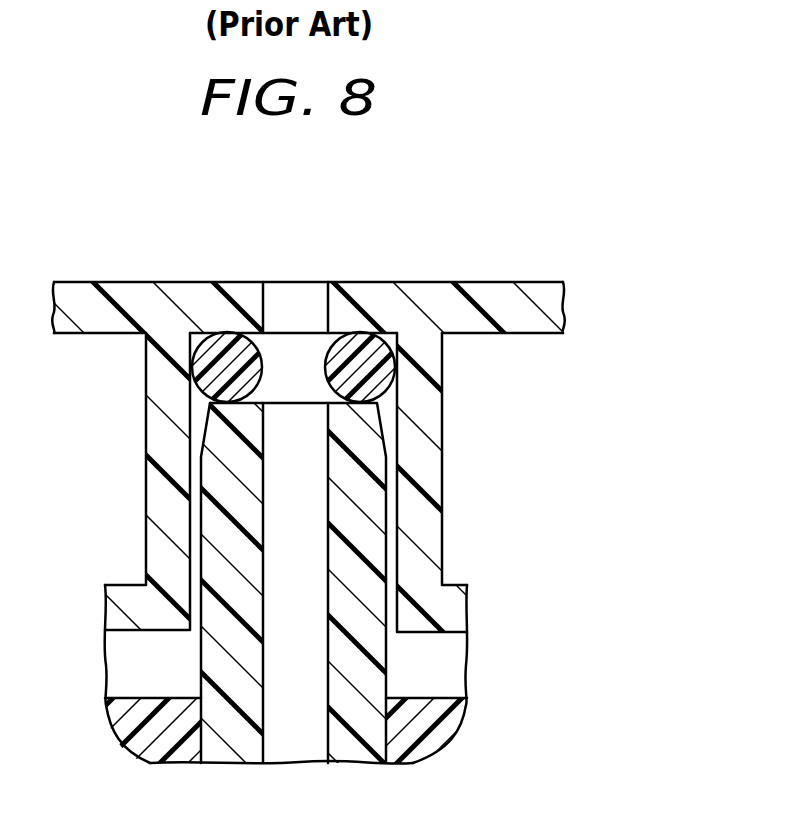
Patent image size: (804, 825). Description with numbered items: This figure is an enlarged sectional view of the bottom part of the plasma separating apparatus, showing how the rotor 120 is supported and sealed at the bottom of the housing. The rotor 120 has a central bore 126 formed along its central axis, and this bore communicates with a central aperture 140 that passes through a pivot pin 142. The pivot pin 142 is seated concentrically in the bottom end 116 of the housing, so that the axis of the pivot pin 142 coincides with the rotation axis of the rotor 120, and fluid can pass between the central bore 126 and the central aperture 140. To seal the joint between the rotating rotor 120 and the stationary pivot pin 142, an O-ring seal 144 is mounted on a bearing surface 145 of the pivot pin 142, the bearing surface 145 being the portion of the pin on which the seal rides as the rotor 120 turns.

The rotor 120 is at (492, 282).
The central bore 126 is at (307, 298).
The bearing surface 145 is at (257, 405).
The O-ring seal 144 is at (397, 330).
The pivot pin 142 is at (363, 532).
The central aperture 140 is at (283, 556).
The bottom end 116 is at (397, 700).